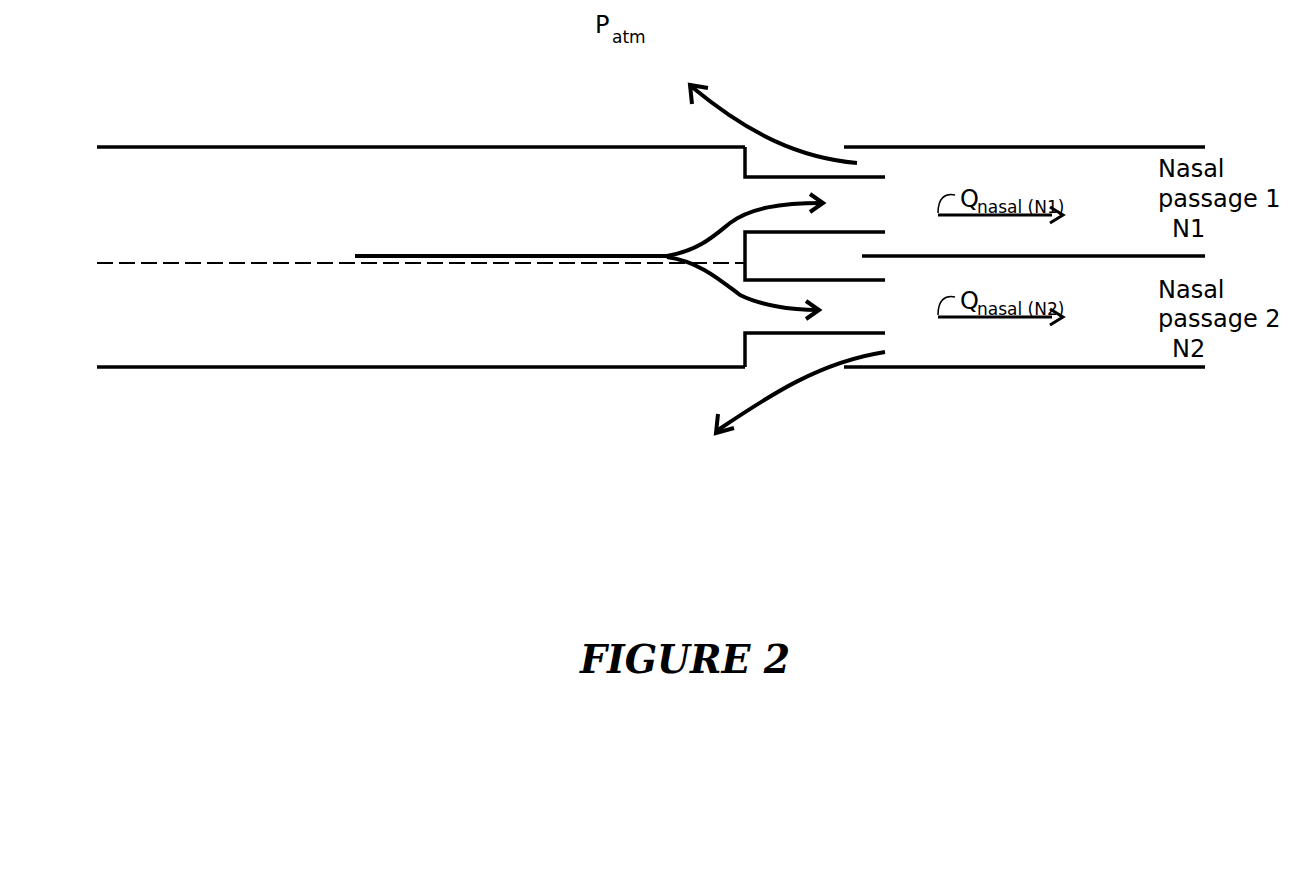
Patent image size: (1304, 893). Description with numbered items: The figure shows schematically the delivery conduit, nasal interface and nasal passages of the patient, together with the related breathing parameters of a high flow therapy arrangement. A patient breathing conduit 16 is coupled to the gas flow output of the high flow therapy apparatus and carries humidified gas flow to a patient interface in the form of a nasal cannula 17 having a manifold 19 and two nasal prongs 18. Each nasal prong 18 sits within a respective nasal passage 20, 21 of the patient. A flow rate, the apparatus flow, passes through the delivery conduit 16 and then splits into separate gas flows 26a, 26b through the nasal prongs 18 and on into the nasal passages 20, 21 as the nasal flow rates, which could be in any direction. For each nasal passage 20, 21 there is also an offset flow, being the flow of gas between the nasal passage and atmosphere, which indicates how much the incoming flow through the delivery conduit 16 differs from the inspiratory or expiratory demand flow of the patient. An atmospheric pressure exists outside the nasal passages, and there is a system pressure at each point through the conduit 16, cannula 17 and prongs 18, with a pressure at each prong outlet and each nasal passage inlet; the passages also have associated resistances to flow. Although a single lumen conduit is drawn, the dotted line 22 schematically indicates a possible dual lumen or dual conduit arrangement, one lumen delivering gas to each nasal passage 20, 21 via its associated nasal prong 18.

The patient breathing conduit 16 is at (415, 147).
The nasal cannula 17 is at (421, 454).
The manifold 19 is at (617, 373).
The nasal prongs 18 is at (800, 177).
The nasal passage 20 is at (1080, 147).
The nasal passage 21 is at (1143, 367).
The dotted line 22 is at (563, 267).
The gas flow 26a is at (727, 222).
The gas flow 26b is at (737, 300).